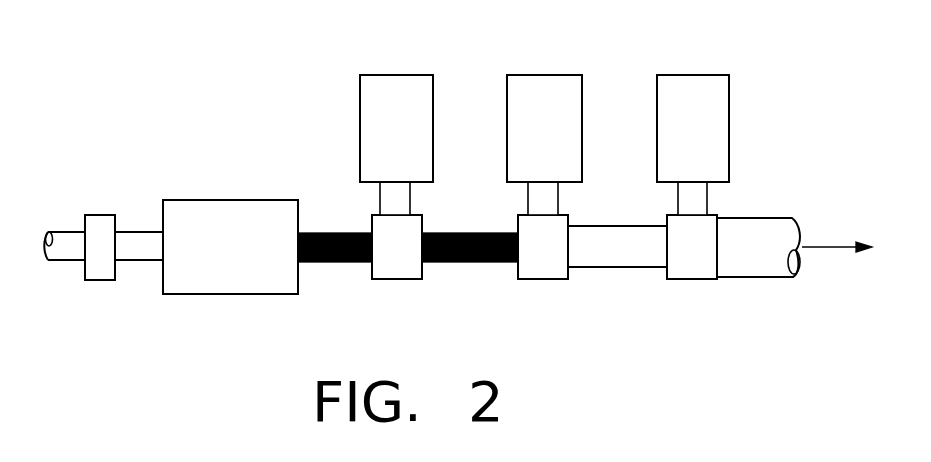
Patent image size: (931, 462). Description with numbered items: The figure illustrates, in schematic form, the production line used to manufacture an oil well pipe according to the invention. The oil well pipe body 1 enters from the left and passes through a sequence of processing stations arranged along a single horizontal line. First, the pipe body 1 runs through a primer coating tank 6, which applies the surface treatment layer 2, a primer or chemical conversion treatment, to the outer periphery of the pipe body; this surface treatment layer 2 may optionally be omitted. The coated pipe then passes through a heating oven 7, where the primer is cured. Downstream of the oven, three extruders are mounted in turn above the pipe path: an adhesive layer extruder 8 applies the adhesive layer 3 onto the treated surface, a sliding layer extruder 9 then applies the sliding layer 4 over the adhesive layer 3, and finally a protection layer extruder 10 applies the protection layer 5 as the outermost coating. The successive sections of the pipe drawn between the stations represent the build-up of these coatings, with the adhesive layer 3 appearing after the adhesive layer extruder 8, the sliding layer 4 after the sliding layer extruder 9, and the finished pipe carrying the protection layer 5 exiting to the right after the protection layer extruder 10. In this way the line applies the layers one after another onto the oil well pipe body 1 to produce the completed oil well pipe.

The oil well pipe body 1 is at (63, 232).
The surface treatment layer 2 is at (322, 262).
The adhesive layer 3 is at (457, 262).
The sliding layer 4 is at (582, 267).
The protection layer 5 is at (752, 277).
The primer coating tank 6 is at (108, 215).
The heating oven 7 is at (225, 200).
The adhesive layer extruder 8 is at (412, 75).
The sliding layer extruder 9 is at (538, 75).
The protection layer extruder 10 is at (685, 77).